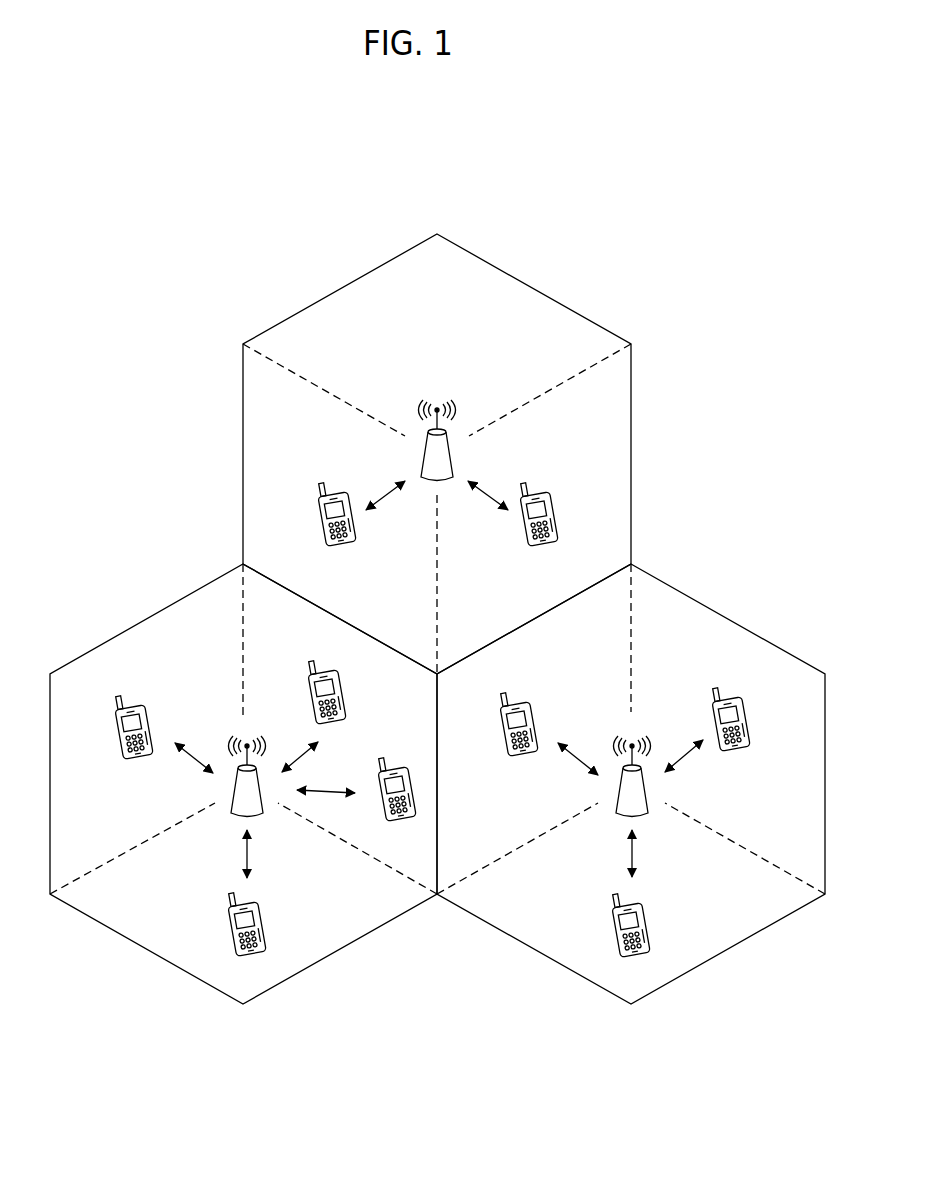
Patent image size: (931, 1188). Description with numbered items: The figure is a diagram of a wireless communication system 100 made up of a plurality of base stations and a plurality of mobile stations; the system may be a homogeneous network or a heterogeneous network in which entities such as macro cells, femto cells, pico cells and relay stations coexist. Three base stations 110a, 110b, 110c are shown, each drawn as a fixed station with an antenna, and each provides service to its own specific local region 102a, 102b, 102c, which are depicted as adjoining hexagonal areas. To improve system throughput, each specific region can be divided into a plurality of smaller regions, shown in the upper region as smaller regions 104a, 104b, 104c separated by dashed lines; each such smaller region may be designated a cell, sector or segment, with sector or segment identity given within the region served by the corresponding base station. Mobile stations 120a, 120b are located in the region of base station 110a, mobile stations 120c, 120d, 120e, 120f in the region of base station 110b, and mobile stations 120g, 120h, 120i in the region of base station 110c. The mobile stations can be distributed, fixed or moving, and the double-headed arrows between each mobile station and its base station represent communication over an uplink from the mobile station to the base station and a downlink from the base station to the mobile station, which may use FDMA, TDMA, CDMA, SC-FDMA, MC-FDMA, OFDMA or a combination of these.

The wireless communication system 100 is at (697, 283).
The specific local region 102a is at (532, 287).
The specific local region 102b is at (148, 618).
The specific local region 102c is at (727, 618).
The smaller region 104a is at (453, 306).
The smaller region 104b is at (420, 604).
The smaller region 104c is at (517, 604).
The base station 110a is at (437, 397).
The base station 110b is at (262, 808).
The base station 110c is at (645, 812).
The mobile station 120a is at (318, 510).
The mobile station 120b is at (553, 505).
The mobile station 120c is at (137, 708).
The mobile station 120d is at (307, 670).
The mobile station 120e is at (393, 762).
The mobile station 120f is at (228, 925).
The mobile station 120g is at (520, 700).
The mobile station 120h is at (612, 905).
The mobile station 120i is at (745, 755).